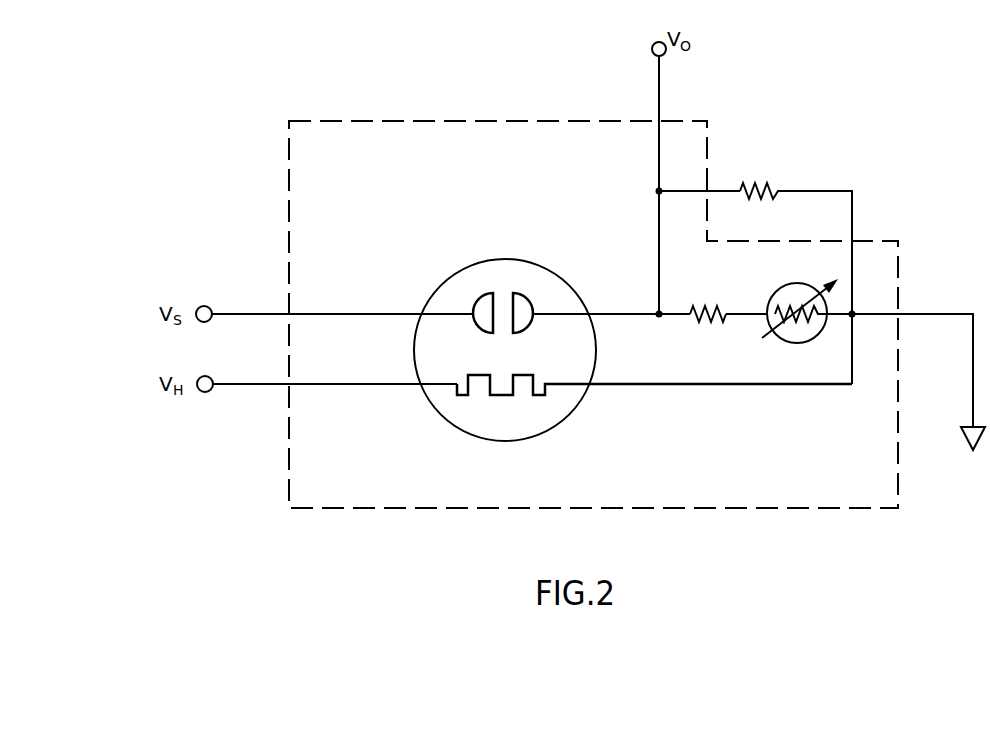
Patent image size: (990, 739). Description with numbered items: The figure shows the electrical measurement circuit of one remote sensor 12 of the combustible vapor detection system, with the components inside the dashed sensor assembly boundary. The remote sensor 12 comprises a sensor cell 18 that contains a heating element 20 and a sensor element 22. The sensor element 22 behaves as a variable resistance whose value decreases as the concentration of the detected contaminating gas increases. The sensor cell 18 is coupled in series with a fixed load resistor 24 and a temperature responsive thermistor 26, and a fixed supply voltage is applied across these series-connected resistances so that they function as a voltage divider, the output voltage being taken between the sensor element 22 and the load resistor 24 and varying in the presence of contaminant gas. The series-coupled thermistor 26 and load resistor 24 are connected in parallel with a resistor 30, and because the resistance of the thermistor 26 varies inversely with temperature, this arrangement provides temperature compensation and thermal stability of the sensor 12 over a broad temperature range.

The remote sensor 12 is at (492, 178).
The sensor cell 18 is at (543, 432).
The heating element 20 is at (502, 396).
The sensor element 22 is at (506, 308).
The fixed load resistor 24 is at (719, 311).
The thermistor 26 is at (806, 342).
The resistor 30 is at (762, 186).